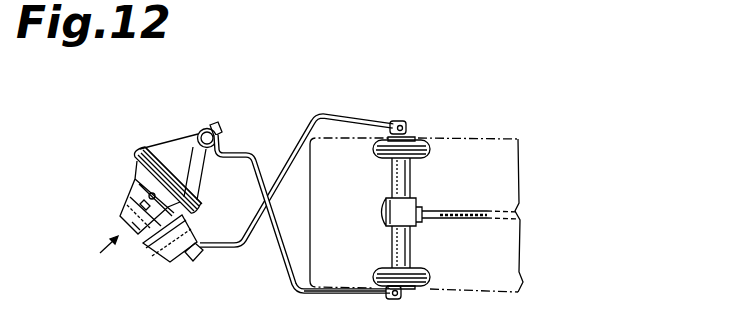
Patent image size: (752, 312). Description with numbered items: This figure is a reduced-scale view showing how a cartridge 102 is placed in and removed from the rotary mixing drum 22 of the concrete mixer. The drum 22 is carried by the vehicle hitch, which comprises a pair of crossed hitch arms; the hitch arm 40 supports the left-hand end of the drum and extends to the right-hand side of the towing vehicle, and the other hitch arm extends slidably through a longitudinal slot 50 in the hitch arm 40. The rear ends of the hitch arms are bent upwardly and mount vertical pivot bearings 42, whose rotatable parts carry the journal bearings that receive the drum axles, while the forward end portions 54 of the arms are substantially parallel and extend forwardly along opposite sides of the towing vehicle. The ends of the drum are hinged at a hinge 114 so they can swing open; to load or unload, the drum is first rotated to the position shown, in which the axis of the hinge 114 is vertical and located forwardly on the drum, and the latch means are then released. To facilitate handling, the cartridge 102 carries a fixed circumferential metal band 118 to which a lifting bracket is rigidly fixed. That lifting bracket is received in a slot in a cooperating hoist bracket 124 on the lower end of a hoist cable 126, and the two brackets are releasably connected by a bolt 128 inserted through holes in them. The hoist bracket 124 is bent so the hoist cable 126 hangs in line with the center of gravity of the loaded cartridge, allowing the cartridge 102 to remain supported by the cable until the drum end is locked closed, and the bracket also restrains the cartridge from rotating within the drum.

The rotary mixing drum 22 is at (176, 139).
The vertical pivot bearings 42 is at (229, 138).
The forward end portions 54 is at (337, 113).
The longitudinal slot 50 is at (280, 230).
The hitch arm 40 is at (290, 283).
The circumferential metal band 118 is at (133, 181).
The hoist cable 126 is at (149, 195).
The hoist bracket 124 is at (143, 204).
The bolt 128 is at (135, 227).
The cartridge 102 is at (146, 234).
The hinge 114 is at (190, 212).